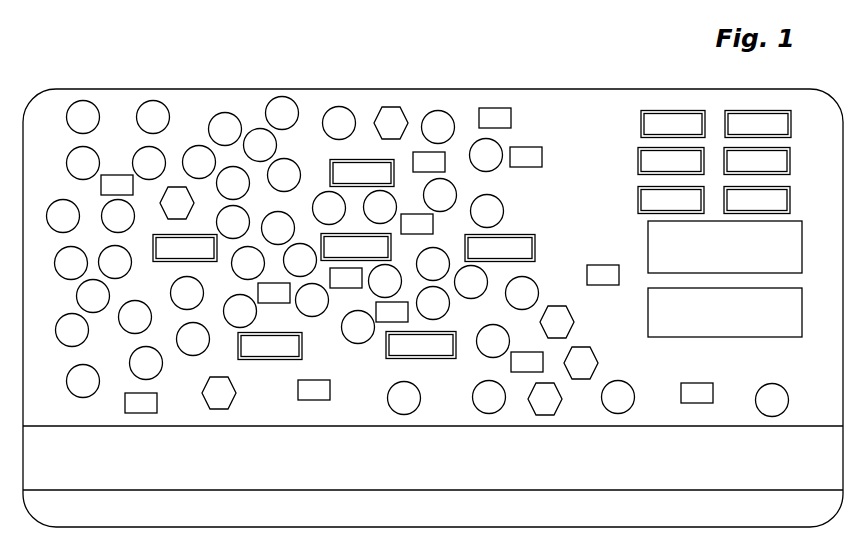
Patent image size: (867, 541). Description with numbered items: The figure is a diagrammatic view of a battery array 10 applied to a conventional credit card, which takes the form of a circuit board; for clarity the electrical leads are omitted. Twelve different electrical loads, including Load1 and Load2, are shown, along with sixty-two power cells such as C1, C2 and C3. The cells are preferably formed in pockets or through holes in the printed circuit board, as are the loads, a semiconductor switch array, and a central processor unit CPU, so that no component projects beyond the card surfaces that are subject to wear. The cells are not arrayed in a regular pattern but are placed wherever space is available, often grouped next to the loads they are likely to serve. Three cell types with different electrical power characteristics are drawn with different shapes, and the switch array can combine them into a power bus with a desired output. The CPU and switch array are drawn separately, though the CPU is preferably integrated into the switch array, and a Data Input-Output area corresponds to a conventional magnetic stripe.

The battery array 10 is at (506, 83).
The central processor unit CPU is at (725, 247).
The power cell C1 is at (149, 163).
The power cell C2 is at (83, 117).
The power cell C3 is at (153, 117).
The electrical load Load1 is at (673, 124).
The electrical load Load2 is at (758, 124).